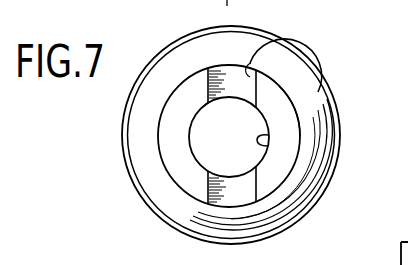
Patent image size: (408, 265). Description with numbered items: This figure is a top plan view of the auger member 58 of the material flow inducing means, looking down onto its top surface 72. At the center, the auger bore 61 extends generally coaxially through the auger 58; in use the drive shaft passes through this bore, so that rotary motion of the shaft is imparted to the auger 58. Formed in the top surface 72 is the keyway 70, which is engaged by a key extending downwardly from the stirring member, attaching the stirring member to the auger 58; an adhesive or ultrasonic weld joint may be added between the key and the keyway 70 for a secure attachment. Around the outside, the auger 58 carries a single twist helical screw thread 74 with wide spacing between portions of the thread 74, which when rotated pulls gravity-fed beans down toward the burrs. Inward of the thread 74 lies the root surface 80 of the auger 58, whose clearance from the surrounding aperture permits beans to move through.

The auger member 58 is at (126, 168).
The auger bore 61 is at (258, 145).
The keyway 70 is at (270, 44).
The top surface 72 is at (287, 95).
The single twist helical screw thread 74 is at (171, 202).
The root surface 80 is at (160, 119).